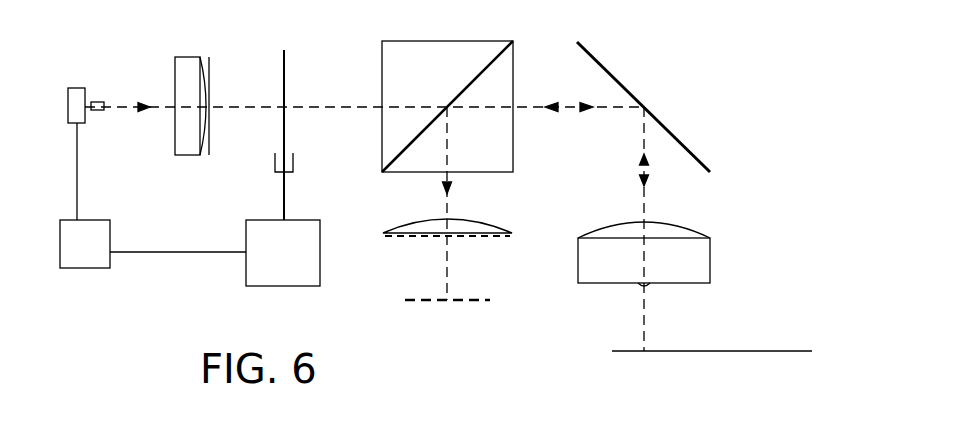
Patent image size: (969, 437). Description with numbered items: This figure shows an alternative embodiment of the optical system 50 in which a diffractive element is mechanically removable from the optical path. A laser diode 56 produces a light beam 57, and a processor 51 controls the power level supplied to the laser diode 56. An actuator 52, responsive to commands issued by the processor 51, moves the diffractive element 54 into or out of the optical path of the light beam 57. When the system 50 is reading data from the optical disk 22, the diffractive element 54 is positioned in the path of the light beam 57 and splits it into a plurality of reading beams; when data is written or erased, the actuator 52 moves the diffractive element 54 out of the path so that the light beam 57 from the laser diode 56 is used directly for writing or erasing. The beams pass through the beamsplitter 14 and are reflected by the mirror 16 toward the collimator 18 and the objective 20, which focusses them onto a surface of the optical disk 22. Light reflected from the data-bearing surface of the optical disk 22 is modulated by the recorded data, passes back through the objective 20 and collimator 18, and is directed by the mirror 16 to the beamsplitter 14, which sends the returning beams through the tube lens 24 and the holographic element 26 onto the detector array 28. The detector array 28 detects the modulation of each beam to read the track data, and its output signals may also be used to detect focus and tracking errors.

The beamsplitter 14 is at (380, 65).
The mirror 16 is at (598, 55).
The collimator 18 is at (190, 155).
The objective 20 is at (712, 253).
The optical disk 22 is at (727, 353).
The tube lens 24 is at (405, 222).
The holographic element 26 is at (472, 238).
The detector array 28 is at (458, 305).
The optical system 50 is at (734, 61).
The processor 51 is at (92, 270).
The actuator 52 is at (275, 287).
The diffractive element 54 is at (283, 62).
The laser diode 56 is at (67, 120).
The light beam 57 is at (140, 100).